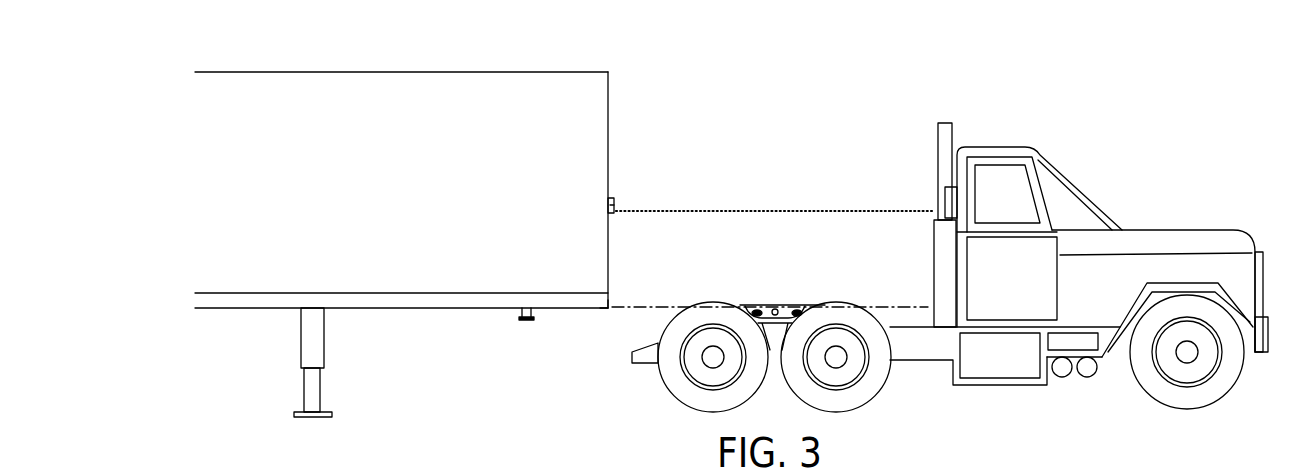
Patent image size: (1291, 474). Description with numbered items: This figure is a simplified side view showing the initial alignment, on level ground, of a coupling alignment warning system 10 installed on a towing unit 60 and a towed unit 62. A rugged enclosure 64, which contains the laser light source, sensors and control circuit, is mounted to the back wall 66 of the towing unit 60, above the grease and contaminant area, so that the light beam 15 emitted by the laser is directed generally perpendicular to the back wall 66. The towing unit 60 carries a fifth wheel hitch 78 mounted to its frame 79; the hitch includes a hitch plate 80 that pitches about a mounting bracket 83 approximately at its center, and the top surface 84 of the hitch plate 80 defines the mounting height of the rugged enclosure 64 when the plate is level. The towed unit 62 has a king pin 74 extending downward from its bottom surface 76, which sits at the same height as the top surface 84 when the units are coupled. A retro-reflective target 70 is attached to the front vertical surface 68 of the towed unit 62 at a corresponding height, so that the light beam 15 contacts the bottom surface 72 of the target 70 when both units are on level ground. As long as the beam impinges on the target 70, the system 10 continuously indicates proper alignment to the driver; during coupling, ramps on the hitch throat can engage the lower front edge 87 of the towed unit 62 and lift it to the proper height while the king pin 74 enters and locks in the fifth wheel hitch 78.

The coupling alignment warning system (CAWS) 10 is at (1074, 74).
The light beam 15 is at (768, 212).
The towing unit 60 is at (1097, 207).
The towed unit 62 is at (487, 85).
The rugged enclosure 64 is at (945, 190).
The back wall 66 is at (950, 170).
The front vertical surface 68 is at (609, 130).
The retro-reflective target 70 is at (614, 200).
The bottom surface of retro-reflective target 72 is at (614, 212).
The king pin 74 is at (522, 322).
The bottom surface 76 is at (400, 308).
The fifth wheel hitch 78 is at (807, 305).
The frame 79 is at (912, 355).
The hitch plate 80 is at (773, 306).
The mounting bracket 83 is at (775, 325).
The top surface of hitch plate 84 is at (752, 307).
The lower front edge 87 is at (607, 309).